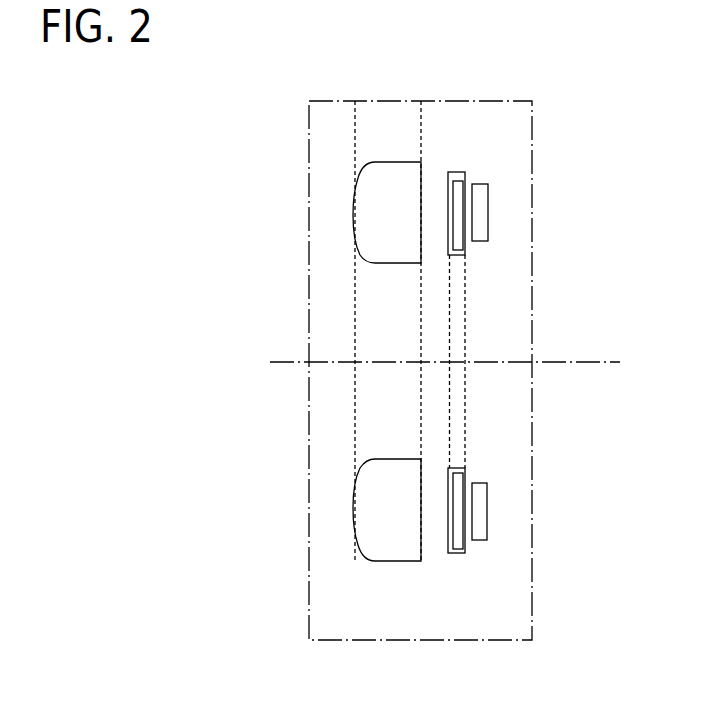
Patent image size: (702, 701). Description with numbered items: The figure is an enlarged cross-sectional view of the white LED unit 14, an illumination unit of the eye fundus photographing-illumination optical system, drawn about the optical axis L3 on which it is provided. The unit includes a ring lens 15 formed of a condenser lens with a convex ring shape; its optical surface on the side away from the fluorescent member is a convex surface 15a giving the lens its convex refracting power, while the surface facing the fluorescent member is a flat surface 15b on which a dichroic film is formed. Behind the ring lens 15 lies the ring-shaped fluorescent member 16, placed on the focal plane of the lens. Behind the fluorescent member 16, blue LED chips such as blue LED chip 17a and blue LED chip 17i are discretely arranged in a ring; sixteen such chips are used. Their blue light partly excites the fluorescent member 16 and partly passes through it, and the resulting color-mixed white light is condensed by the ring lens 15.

The white LED unit 14 is at (533, 103).
The ring lens 15 is at (385, 165).
The convex surface 15a is at (358, 197).
The flat surface 15b is at (425, 172).
The fluorescent member 16 is at (458, 180).
The blue LED chip 17i is at (488, 198).
The blue LED chip 17a is at (487, 507).
The optical axis L3 is at (603, 360).